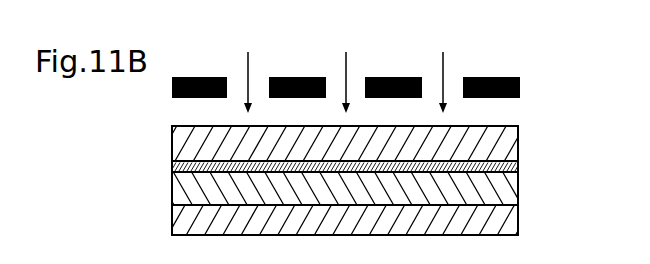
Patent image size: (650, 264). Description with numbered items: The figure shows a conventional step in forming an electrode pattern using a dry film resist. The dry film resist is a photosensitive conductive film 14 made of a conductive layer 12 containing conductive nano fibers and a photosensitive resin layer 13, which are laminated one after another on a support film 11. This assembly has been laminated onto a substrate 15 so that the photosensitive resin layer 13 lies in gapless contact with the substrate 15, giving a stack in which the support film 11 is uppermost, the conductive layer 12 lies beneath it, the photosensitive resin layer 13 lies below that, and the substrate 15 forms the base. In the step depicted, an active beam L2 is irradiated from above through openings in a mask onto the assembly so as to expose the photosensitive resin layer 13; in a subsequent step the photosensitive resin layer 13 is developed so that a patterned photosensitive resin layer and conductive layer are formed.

The support film 11 is at (478, 148).
The conductive layer 12 is at (518, 168).
The photosensitive resin layer 13 is at (370, 191).
The photosensitive conductive film 14 is at (397, 168).
The substrate 15 is at (480, 217).
The active beam L2 is at (443, 72).